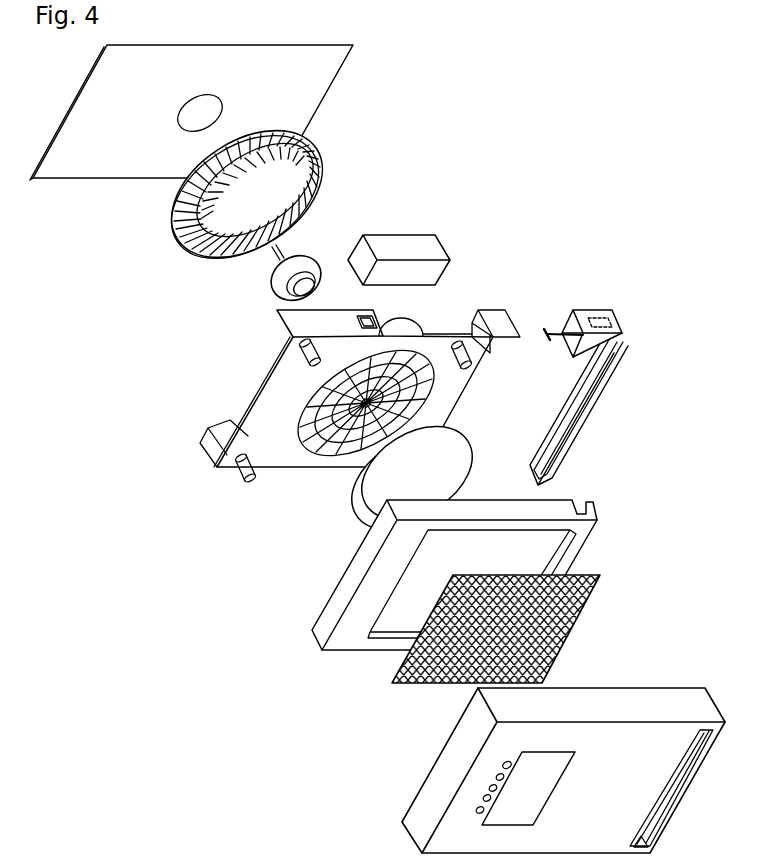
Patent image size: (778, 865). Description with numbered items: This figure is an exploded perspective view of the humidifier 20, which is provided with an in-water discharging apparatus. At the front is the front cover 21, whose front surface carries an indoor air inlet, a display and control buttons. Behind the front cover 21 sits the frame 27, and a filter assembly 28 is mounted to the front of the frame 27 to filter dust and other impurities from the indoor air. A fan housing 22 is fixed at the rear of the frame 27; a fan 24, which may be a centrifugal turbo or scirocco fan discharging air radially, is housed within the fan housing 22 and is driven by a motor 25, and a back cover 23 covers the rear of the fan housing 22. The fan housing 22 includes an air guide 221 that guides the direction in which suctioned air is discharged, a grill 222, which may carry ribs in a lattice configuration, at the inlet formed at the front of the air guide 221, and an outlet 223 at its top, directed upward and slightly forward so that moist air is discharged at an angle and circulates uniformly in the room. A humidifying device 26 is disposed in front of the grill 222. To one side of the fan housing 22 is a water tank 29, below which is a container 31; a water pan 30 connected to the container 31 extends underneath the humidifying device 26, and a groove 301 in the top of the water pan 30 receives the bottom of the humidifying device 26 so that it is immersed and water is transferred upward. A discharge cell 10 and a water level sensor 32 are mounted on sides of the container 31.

The discharge cell 10 is at (573, 333).
The humidifier 20 is at (140, 538).
The front cover 21 is at (445, 778).
The fan housing 22 is at (210, 448).
The air guide 221 is at (395, 325).
The grill 222 is at (325, 450).
The outlet 223 is at (240, 398).
The back cover 23 is at (85, 170).
The fan 24 is at (173, 218).
The motor 25 is at (272, 278).
The humidifying device 26 is at (360, 507).
The frame 27 is at (312, 636).
The filter assembly 28 is at (420, 688).
The water tank 29 is at (408, 248).
The water pan 30 is at (577, 432).
The groove 301 is at (562, 430).
The container 31 is at (590, 310).
The water level sensor 32 is at (612, 318).